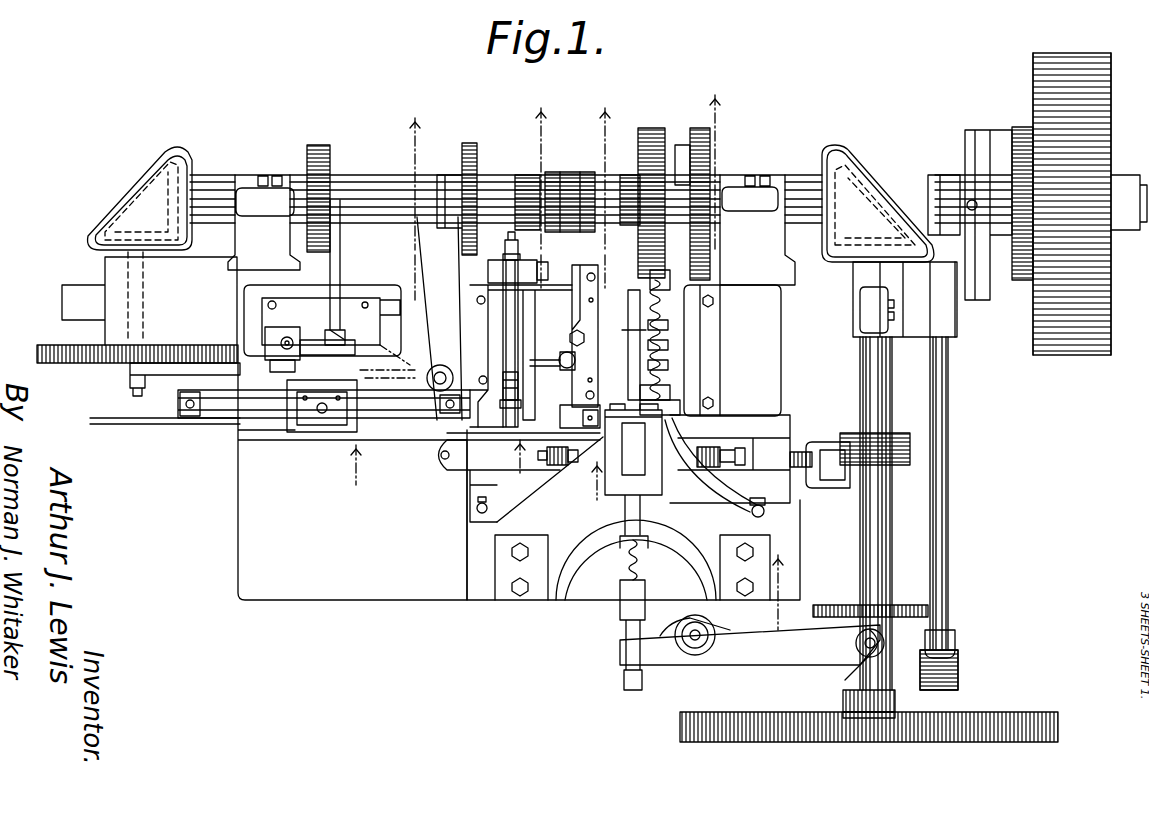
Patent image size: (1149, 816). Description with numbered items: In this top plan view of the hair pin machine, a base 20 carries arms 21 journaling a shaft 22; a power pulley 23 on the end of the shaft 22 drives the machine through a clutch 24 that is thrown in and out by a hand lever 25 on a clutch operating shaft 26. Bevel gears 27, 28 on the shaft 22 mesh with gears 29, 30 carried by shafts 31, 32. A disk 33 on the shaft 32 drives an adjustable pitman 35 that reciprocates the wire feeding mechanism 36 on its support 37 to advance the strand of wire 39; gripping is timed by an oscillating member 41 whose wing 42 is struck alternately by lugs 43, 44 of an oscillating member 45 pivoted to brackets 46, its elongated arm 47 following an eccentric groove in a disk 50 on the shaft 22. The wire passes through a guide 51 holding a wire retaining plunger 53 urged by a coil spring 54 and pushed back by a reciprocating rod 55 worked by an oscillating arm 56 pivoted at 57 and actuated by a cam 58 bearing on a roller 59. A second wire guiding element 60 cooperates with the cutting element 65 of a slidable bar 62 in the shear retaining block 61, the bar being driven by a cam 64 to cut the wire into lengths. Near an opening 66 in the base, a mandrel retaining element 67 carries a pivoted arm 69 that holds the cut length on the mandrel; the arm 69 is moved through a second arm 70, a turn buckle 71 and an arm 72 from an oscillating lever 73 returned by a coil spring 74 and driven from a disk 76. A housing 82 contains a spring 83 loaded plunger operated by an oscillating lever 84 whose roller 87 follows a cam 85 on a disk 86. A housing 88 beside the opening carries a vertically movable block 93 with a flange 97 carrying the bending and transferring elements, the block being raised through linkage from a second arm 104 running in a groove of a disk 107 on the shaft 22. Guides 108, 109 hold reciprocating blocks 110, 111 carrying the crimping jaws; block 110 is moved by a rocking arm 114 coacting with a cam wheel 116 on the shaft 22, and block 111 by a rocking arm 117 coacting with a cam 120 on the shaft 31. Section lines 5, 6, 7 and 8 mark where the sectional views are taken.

The section line 5- 5 is at (384, 299).
The section line 6- 6 is at (529, 279).
The section line 7- 7 is at (600, 293).
The section line 8- 8 is at (745, 363).
The base 20 is at (293, 588).
The arms 21 is at (256, 243).
The shaft 22 is at (355, 192).
The power pulley 23 is at (1090, 133).
The clutch 24 is at (1002, 122).
The hand lever 25 is at (950, 638).
The clutch operating shaft 26 is at (948, 442).
The bevel gear 27 is at (840, 168).
The bevel gear 28 is at (187, 152).
The gear 29 is at (865, 215).
The gear 30 is at (120, 228).
The shaft 31 is at (882, 390).
The shaft 32 is at (130, 280).
The disk 33 is at (95, 357).
The pitman 35 is at (168, 372).
The wire feeding mechanism 36 is at (322, 428).
The support 37 is at (402, 418).
The strand of wire 39 is at (152, 424).
The oscillating member 41 is at (290, 331).
The wing 42 is at (330, 360).
The lug 43 is at (282, 345).
The lug 44 is at (387, 357).
The oscillating member 45 is at (345, 310).
The brackets 46 is at (252, 300).
The elongated arm 47 is at (342, 252).
The disk 50 is at (318, 147).
The guide 51 is at (510, 335).
The wire retaining plunger 53 is at (529, 381).
The coil spring 54 is at (530, 395).
The reciprocating rod 55 is at (508, 382).
The oscillating arm 56 is at (515, 270).
The pivotal connection 57 is at (540, 268).
The cam 58 is at (528, 200).
The roller 59 is at (547, 232).
The second wire guiding element 60 is at (574, 413).
The shear retaining block 61 is at (586, 298).
The slidable bar 62 is at (614, 255).
The cam 64 is at (566, 228).
The adjustable cutting element 65 is at (586, 222).
The opening 66 is at (640, 326).
The mandrel retaining element 67 is at (616, 472).
The arm 69 is at (655, 392).
The second arm 70 is at (662, 378).
The turn buckle 71 is at (660, 330).
The arm 72 is at (658, 308).
The oscillating lever 73 is at (648, 278).
The coil spring 74 is at (660, 362).
The disk 76 is at (650, 130).
The housing 82 is at (626, 604).
The coil spring 83 is at (630, 560).
The oscillating lever 84 is at (672, 663).
The cam 85 is at (898, 620).
The disk 86 is at (925, 612).
The roller 87 is at (858, 670).
The housing 88 is at (662, 346).
The vertically movable block 93 is at (680, 400).
The flange 97 is at (580, 350).
The second arm 104 is at (684, 170).
The disk 107 is at (710, 152).
The guide 108 is at (482, 488).
The guide 109 is at (703, 432).
The reciprocating block 110 is at (510, 462).
The reciprocating block 111 is at (742, 457).
The rocking arm 114 is at (440, 318).
The cam wheel 116 is at (470, 143).
The rocking arm 117 is at (812, 470).
The cam 120 is at (880, 455).